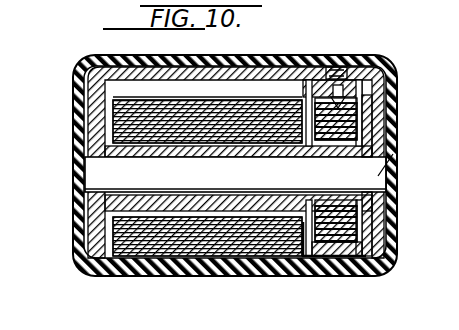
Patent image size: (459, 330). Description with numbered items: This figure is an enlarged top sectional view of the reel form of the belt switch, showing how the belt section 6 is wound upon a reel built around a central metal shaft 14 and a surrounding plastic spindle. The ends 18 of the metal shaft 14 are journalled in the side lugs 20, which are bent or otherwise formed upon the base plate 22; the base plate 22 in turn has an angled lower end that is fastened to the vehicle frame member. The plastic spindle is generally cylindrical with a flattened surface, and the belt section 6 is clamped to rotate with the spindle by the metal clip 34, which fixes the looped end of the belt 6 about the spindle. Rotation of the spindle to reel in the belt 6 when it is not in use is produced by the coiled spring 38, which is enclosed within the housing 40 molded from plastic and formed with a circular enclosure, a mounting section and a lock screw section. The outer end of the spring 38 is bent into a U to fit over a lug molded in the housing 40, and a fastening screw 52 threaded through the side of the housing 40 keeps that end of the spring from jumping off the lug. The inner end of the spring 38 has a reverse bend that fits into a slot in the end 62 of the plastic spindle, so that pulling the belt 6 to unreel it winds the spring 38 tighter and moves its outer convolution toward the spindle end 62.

The side lugs 20 is at (396, 100).
The base plate 22 is at (294, 72).
The belt section 6 is at (208, 112).
The metal clip 34 is at (118, 229).
The metal shaft 14 is at (282, 184).
The fastening screw 52 is at (338, 72).
The end of the plastic spindle 62 is at (370, 147).
The coiled spring 38 is at (350, 248).
The housing 40 is at (303, 258).
The ends of the metal shaft 18 is at (396, 162).